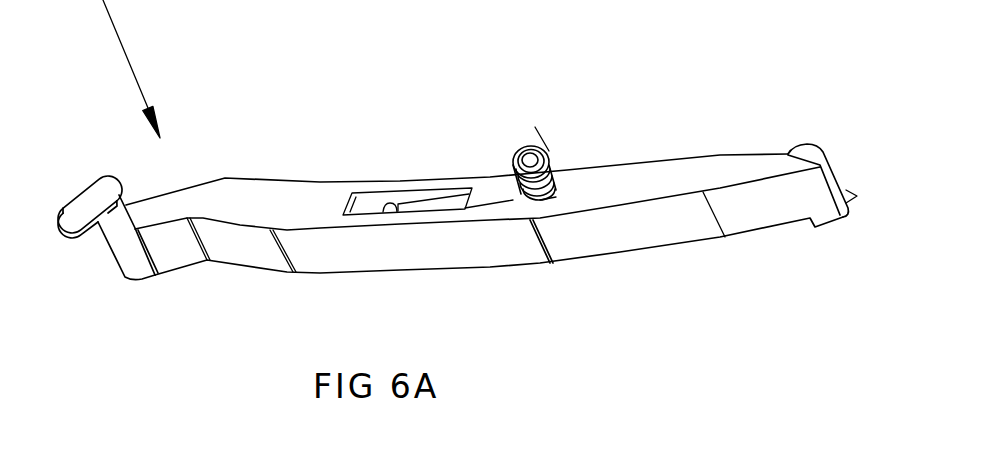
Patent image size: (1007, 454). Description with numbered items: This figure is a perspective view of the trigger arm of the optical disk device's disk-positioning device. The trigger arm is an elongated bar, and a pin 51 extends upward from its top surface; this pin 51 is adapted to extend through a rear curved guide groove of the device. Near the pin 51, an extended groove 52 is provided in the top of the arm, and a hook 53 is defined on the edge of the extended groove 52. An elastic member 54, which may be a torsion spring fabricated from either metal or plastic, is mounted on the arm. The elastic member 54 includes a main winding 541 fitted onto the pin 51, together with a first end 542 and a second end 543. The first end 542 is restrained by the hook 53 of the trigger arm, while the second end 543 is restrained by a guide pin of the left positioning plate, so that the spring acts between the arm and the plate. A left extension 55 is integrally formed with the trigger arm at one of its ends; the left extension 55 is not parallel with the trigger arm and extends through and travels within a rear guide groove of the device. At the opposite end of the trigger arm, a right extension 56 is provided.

The pin 51 is at (588, 150).
The extended groove 52 is at (423, 172).
The hook 53 is at (380, 178).
The elastic member 54 is at (493, 135).
The main winding 541 is at (578, 212).
The first end 542 is at (515, 232).
The second end 543 is at (571, 98).
The left extension 55 is at (81, 172).
The right extension 56 is at (841, 234).